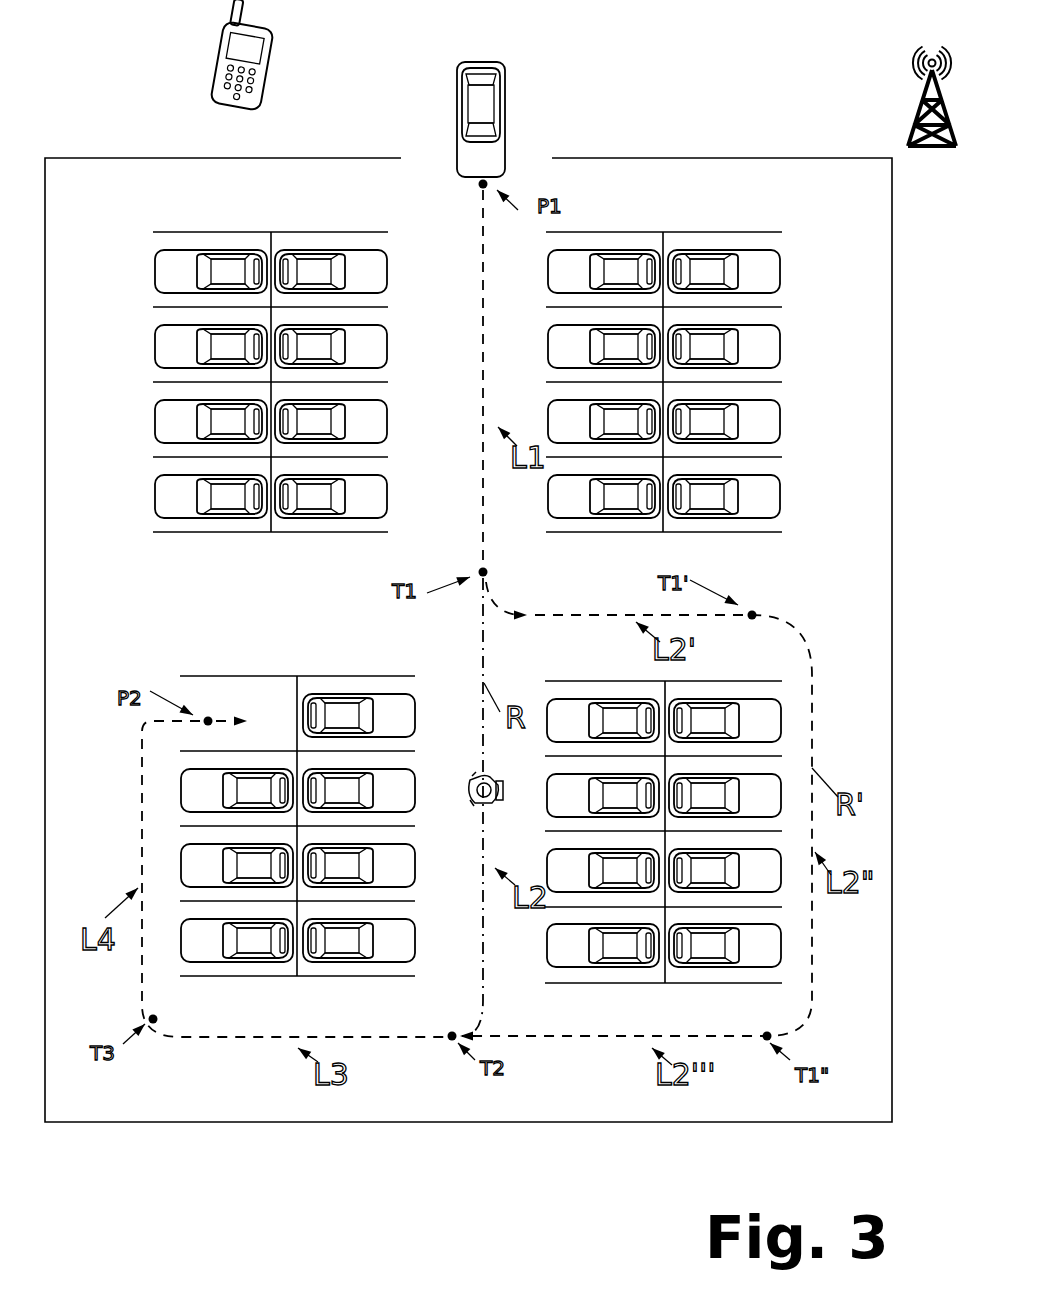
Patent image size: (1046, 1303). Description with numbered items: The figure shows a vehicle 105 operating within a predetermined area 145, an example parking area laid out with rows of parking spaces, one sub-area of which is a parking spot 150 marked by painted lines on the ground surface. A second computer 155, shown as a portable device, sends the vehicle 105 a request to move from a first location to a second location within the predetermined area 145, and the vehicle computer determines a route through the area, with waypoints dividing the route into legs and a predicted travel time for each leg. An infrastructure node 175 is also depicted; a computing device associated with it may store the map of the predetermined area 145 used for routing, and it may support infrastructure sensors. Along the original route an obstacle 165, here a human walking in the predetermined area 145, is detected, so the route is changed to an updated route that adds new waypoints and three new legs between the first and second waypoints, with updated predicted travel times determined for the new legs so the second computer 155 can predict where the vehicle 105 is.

The vehicle 105 is at (453, 79).
The predetermined area 145 is at (603, 122).
The parking spot 150 is at (262, 694).
The second computer 155 is at (205, 45).
The obstacle 165 is at (468, 778).
The infrastructure node 175 is at (912, 110).